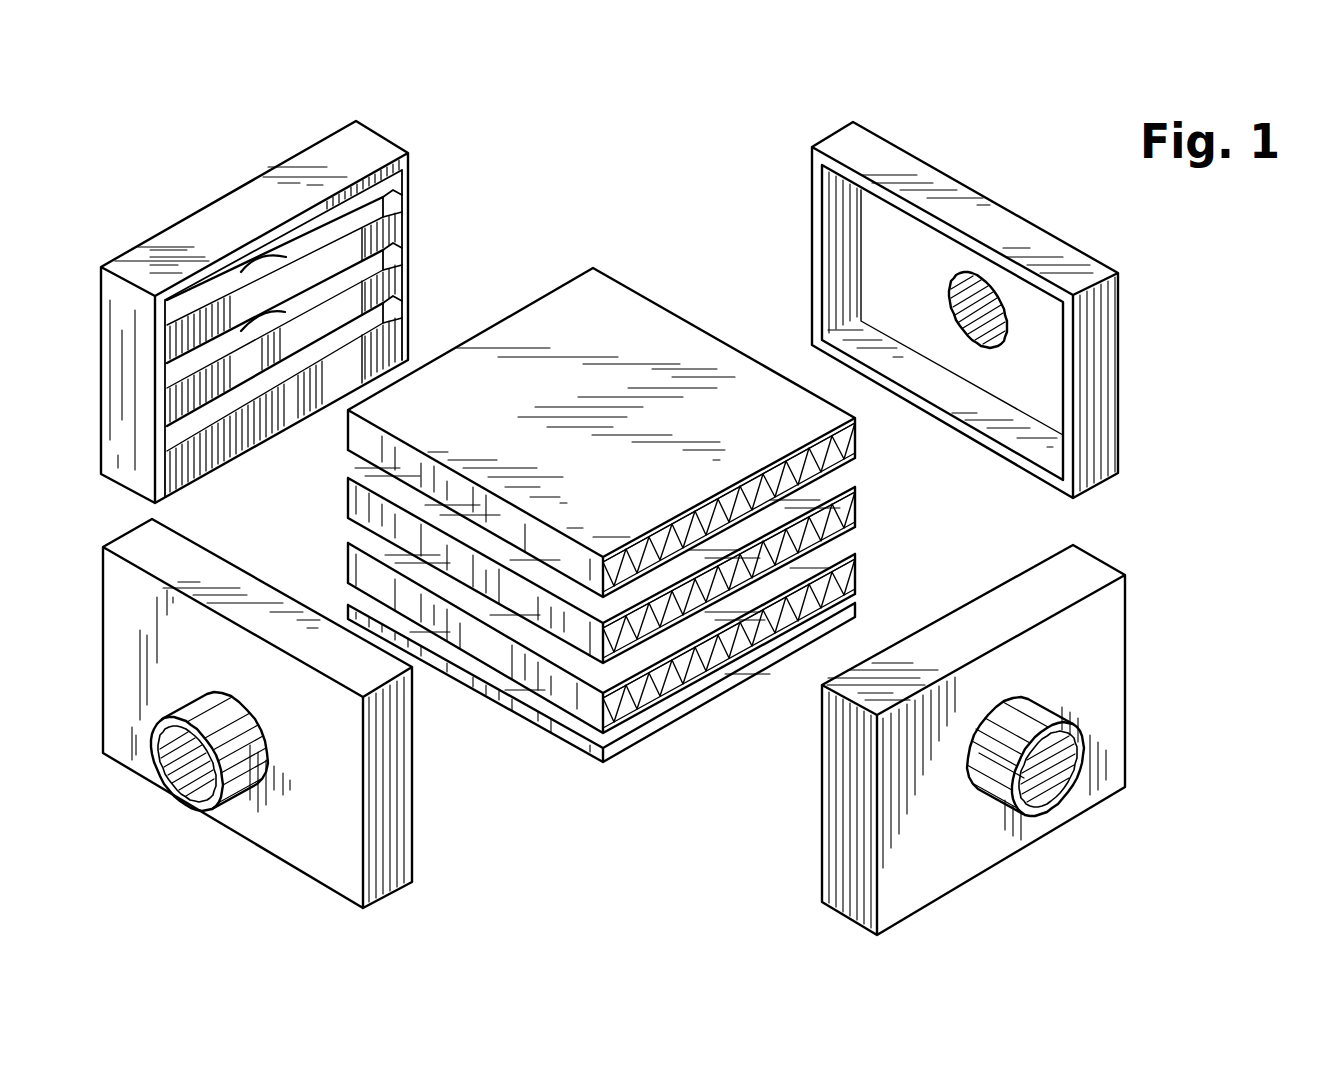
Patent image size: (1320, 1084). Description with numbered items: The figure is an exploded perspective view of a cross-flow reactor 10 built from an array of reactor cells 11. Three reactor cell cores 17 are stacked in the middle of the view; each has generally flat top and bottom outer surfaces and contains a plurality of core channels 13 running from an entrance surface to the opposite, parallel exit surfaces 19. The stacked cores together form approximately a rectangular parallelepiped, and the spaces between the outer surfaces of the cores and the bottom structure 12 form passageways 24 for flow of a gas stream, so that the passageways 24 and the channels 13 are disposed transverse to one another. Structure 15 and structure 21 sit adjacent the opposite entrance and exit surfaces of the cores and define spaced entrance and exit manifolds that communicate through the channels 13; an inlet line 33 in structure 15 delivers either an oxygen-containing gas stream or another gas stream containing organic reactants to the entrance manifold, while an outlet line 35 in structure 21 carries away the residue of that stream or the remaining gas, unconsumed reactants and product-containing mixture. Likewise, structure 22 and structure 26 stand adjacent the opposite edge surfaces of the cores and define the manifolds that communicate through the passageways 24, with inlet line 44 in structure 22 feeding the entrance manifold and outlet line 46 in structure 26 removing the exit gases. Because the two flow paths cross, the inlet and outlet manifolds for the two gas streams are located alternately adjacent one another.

The cross-flow reactor 10 is at (117, 508).
The reactor cells 11 is at (635, 290).
The bottom structure 12 is at (634, 745).
The core channels 13 is at (767, 553).
The structure 15 is at (220, 195).
The reactor cell cores 17 is at (347, 570).
The exit surfaces 19 is at (643, 630).
The structure 21 is at (967, 885).
The structure 22 is at (303, 873).
The passageways 24 is at (855, 602).
The structure 26 is at (1025, 217).
The inlet line 33 is at (263, 257).
The outlet line 35 is at (1067, 823).
The inlet line 44 is at (180, 812).
The outlet line 46 is at (950, 272).